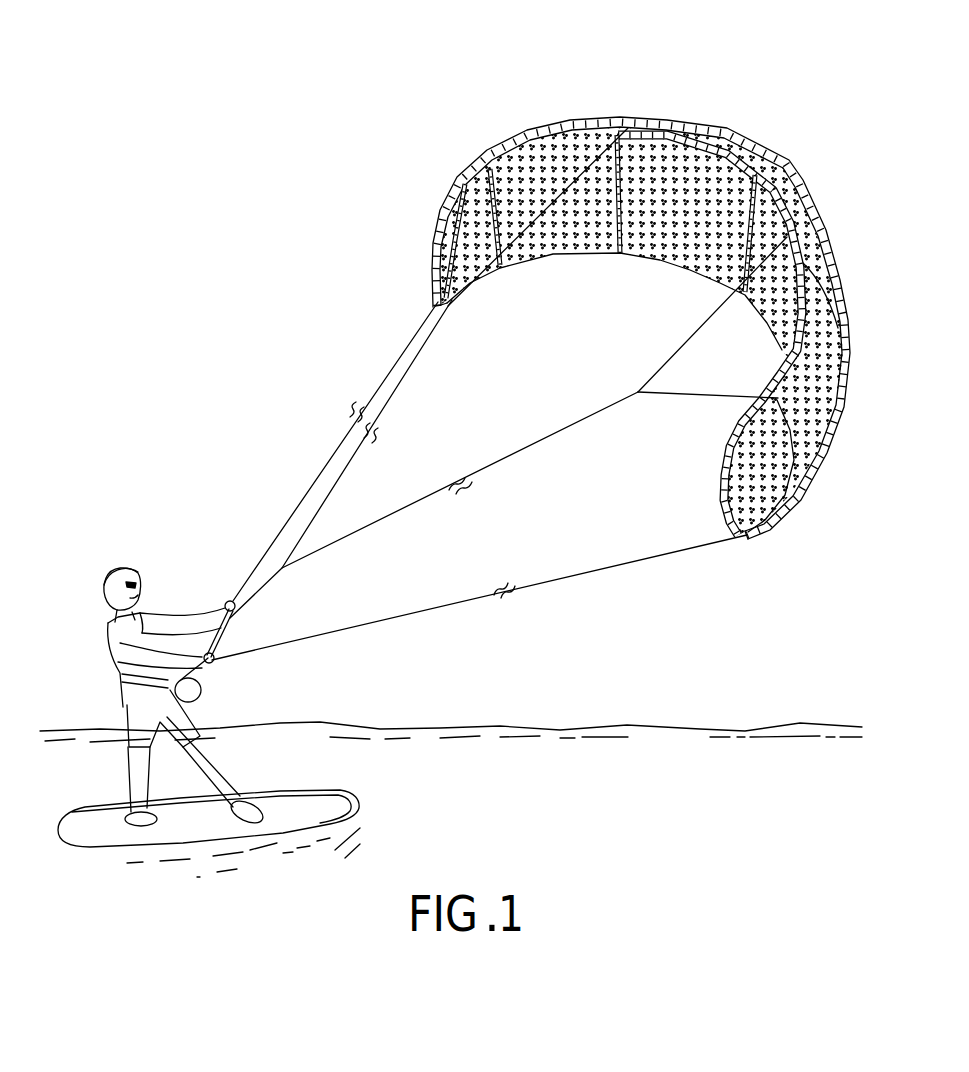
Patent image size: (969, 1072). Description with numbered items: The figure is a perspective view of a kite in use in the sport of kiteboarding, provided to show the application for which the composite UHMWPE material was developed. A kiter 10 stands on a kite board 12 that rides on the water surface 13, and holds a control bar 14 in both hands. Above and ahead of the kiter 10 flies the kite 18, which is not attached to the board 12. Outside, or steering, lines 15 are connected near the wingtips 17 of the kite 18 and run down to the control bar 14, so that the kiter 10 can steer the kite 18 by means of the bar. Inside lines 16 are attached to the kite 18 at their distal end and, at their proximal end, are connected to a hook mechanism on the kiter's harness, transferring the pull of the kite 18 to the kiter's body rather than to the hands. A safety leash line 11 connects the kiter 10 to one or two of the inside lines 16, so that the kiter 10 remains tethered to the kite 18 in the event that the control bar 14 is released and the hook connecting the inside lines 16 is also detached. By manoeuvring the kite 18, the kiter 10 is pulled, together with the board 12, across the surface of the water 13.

The kiter 10 is at (103, 620).
The safety leash line 11 is at (203, 697).
The kite board 12 is at (350, 794).
The water surface 13 is at (743, 730).
The control bar 14 is at (226, 600).
The outside (steering) lines 15 is at (308, 492).
The inside lines 16 is at (392, 392).
The wingtips 17 is at (433, 300).
The kite 18 is at (727, 123).